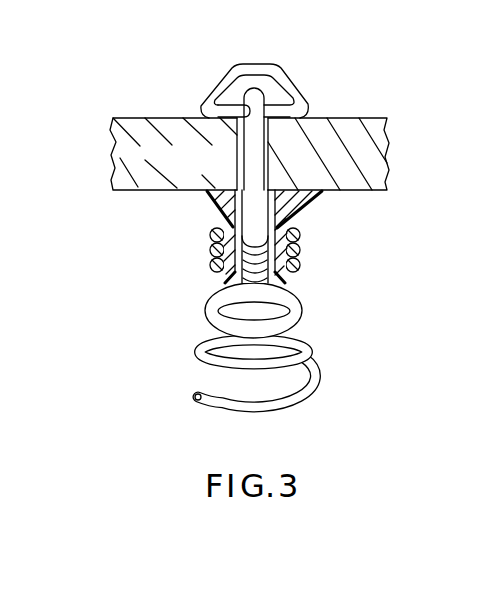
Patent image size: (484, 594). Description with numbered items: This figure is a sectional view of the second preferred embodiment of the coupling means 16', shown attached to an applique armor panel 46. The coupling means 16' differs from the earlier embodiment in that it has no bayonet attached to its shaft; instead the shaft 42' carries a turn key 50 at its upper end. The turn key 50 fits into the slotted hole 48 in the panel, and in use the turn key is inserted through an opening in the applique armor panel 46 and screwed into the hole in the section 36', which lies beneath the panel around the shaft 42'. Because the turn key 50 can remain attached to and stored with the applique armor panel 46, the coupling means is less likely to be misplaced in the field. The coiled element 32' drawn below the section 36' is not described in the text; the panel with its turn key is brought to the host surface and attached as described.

The applique armor panel 46 is at (112, 148).
The slotted hole 48 is at (236, 180).
The turn key 50 is at (283, 72).
The shaft 42' is at (310, 139).
The section 36' is at (225, 236).
The coupling means 16' is at (325, 214).
The coil spring 32' is at (225, 317).